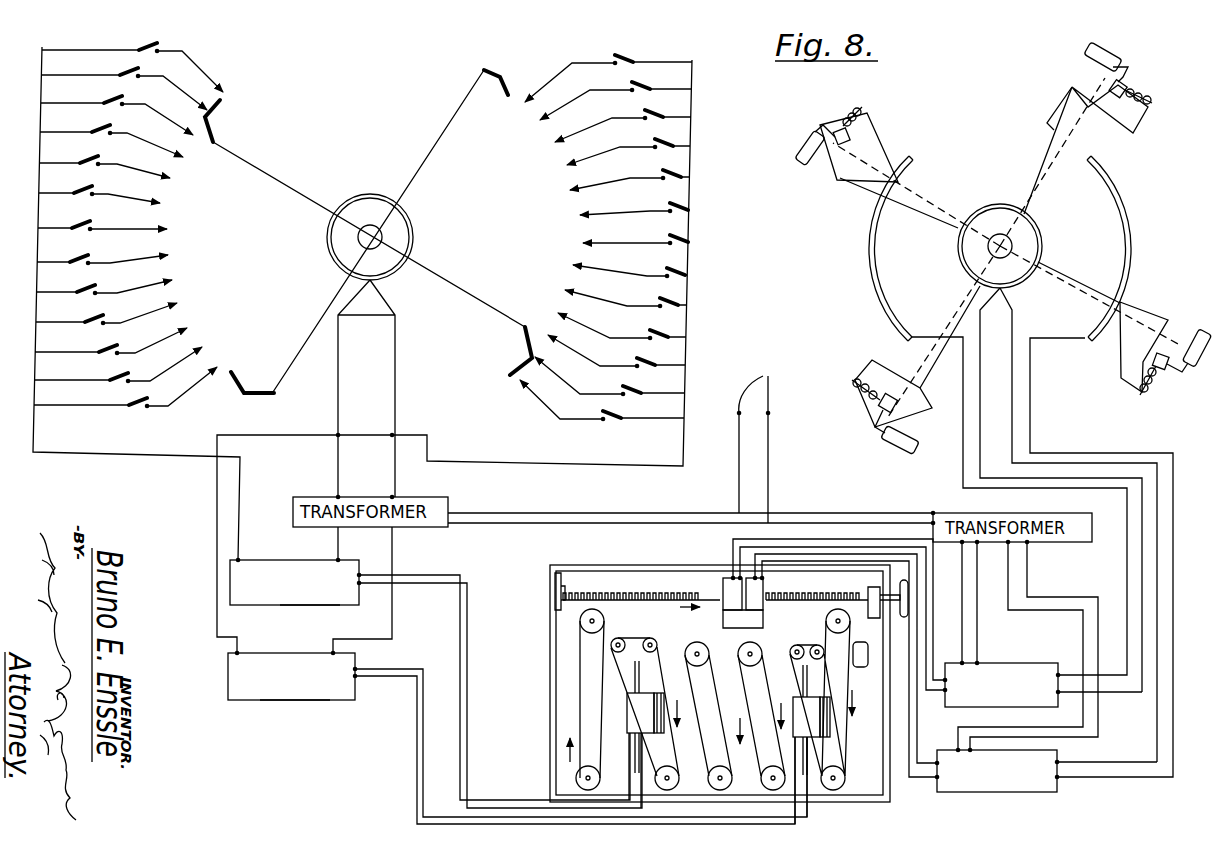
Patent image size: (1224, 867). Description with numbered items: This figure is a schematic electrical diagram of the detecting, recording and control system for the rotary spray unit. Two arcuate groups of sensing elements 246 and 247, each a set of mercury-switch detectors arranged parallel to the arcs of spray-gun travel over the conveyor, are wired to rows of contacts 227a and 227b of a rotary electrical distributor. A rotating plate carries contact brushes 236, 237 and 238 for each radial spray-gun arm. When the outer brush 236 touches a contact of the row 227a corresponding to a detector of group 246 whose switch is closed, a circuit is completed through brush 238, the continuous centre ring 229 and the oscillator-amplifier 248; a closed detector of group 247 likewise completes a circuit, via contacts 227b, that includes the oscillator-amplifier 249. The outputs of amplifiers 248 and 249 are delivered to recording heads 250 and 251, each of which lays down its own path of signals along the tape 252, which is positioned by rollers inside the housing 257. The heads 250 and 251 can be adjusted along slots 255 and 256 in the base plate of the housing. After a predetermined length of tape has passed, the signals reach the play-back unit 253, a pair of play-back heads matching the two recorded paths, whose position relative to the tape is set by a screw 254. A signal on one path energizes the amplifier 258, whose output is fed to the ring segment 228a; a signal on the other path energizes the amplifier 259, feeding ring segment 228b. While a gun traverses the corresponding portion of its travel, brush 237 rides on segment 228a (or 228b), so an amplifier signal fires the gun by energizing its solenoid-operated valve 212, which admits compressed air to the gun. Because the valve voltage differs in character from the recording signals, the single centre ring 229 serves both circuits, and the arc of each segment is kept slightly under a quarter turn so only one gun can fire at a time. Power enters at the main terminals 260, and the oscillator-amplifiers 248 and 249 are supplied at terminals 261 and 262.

The group of sensing elements 246 is at (85, 75).
The group of sensing elements 247 is at (657, 89).
The contact brush 236 is at (212, 129).
The contact brush 238 is at (352, 210).
The continuous ring 229 is at (412, 245).
The row of contacts 227a is at (168, 186).
The row of contacts 227b is at (583, 243).
The contact brush 237 is at (862, 207).
The ring segment 228a is at (878, 269).
The ring segment 228b is at (1127, 233).
The solenoid-operated valve 212 is at (862, 391).
The main terminals 260 is at (765, 435).
The oscillator-amplifier 248 is at (253, 560).
The oscillator-amplifier 249 is at (258, 653).
The terminals 261 is at (310, 607).
The terminals 262 is at (292, 702).
The recording head 250 is at (627, 703).
The recording head 251 is at (793, 711).
The tape 252 is at (581, 644).
The play-back unit 253 is at (722, 583).
The screw 254 is at (775, 596).
The slot 255 is at (637, 665).
The slot 256 is at (798, 671).
The housing 257 is at (552, 728).
The amplifier 258 is at (995, 663).
The amplifier 259 is at (1013, 793).